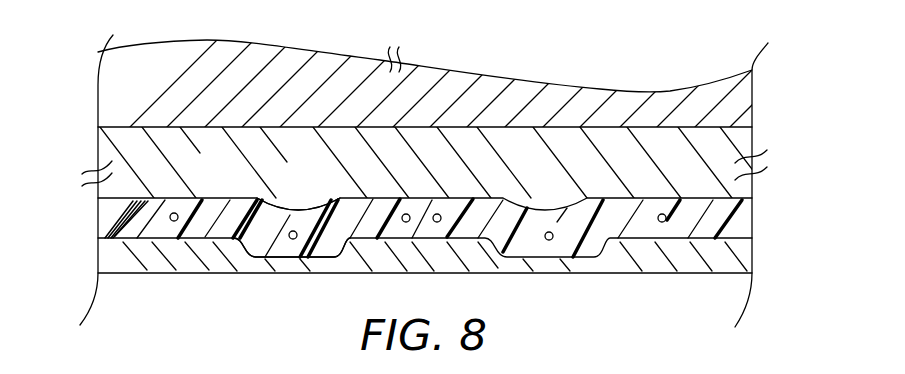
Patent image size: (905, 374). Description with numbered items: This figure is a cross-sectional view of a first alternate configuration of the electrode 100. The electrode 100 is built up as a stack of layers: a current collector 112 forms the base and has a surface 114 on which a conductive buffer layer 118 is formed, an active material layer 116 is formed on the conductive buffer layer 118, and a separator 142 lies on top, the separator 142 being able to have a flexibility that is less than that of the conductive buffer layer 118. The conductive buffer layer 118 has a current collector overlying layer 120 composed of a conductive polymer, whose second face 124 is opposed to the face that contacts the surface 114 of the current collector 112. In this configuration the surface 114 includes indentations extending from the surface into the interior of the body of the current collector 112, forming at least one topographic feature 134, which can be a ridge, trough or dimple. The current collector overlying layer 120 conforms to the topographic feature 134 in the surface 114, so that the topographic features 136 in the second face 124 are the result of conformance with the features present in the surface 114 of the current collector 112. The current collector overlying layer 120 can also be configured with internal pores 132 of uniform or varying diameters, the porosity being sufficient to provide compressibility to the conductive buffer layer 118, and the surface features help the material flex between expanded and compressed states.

The electrode 100 is at (780, 82).
The current collector 112 is at (100, 255).
The surface 114 is at (203, 233).
The active material layer 116 is at (742, 137).
The conductive buffer layer 118 is at (747, 215).
The current collector overlying layer 120 is at (717, 215).
The second face 124 is at (113, 196).
The pores 132 is at (663, 223).
The topographic feature 134 is at (263, 255).
The topographic features 136 is at (310, 198).
The separator 142 is at (667, 100).